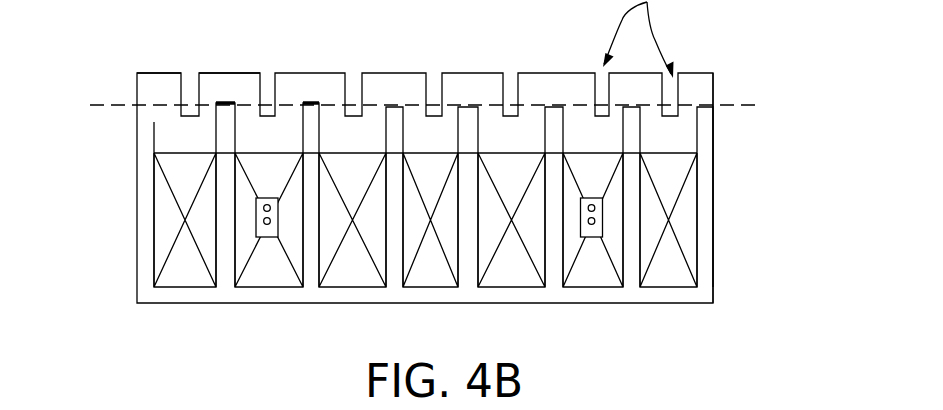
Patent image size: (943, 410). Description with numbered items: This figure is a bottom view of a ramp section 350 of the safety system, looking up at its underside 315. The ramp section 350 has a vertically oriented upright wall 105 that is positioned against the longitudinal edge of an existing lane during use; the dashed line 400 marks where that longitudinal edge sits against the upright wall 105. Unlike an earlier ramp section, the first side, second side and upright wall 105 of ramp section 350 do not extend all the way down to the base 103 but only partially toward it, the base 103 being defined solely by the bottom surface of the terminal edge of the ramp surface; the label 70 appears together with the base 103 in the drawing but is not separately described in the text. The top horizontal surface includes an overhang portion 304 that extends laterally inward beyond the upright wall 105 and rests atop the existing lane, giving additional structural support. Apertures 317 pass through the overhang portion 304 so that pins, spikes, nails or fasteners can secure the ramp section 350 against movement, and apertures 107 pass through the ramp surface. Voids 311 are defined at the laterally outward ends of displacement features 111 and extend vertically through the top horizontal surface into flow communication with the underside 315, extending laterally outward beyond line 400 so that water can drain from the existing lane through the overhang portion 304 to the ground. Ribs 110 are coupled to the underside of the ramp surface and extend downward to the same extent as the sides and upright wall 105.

The filter housing 70 is at (358, 214).
The base 103 is at (167, 305).
The overhang portion 304 is at (136, 72).
The ramp section 350 is at (725, 250).
The dashed line 400 is at (112, 104).
The upright wall 105 is at (302, 96).
The rib 110 is at (553, 268).
The void 311 is at (177, 118).
The underside 315 is at (165, 227).
The aperture 317 is at (553, 86).
The aperture 107 is at (277, 223).
The displacement feature 111 is at (247, 404).